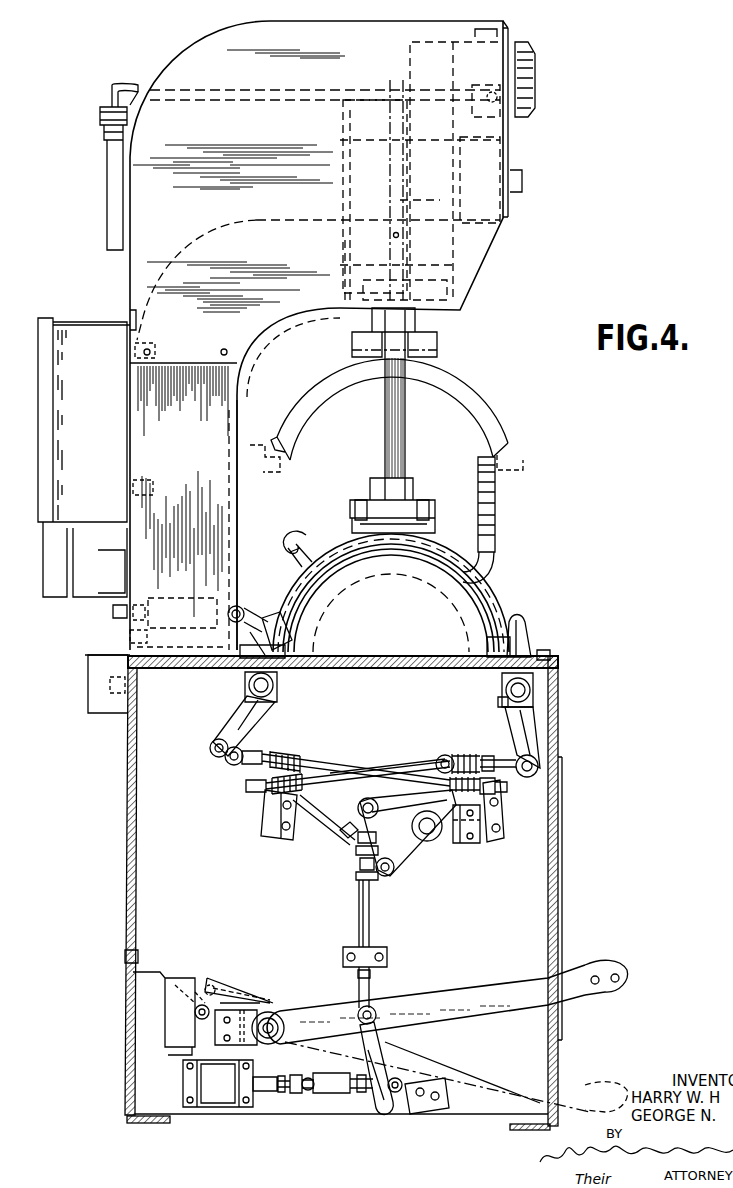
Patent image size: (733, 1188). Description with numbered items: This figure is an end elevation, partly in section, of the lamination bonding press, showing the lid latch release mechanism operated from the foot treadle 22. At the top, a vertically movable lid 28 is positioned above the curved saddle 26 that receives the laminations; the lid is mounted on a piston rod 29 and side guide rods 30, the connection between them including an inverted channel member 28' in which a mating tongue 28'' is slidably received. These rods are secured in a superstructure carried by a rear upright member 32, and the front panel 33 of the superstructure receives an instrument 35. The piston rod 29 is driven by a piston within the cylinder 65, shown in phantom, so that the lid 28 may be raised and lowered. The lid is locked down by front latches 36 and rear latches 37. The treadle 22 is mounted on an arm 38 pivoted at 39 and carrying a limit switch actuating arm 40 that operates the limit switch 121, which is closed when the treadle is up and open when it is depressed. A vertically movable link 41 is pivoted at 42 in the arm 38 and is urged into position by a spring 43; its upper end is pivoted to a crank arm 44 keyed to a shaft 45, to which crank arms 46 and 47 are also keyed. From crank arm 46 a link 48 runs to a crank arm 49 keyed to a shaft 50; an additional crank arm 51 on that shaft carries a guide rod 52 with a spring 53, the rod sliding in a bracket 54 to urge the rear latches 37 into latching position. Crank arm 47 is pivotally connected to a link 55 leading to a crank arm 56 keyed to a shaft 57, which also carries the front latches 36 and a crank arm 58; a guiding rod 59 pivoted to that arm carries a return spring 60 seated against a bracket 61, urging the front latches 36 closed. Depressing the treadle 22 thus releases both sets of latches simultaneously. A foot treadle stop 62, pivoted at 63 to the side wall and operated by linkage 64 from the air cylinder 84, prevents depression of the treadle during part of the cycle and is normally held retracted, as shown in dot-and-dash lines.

The foot treadle 22 is at (600, 966).
The curved saddle 26 is at (455, 608).
The lid 28 is at (408, 471).
The inverted channel member 28' is at (335, 491).
The mating tongue 28'' is at (449, 498).
The piston rod 29 is at (385, 398).
The side guide rods 30 is at (403, 424).
The rear upright member 32 is at (238, 512).
The front panel 33 is at (503, 21).
The instrument 35 is at (535, 55).
The front latches 36 is at (515, 626).
The rear latches 37 is at (280, 608).
The arm 38 is at (480, 992).
The pivot 39 is at (272, 1018).
The limit switch actuating arm 40 is at (223, 1002).
The vertically movable link 41 is at (370, 920).
The pivot 42 is at (372, 1008).
The spring 43 is at (358, 872).
The crank arm 44 is at (408, 790).
The shaft 45 is at (430, 832).
The crank arm 46 is at (408, 860).
The crank arm 47 is at (463, 845).
The link 48 is at (325, 835).
The crank arm 49 is at (230, 722).
The shaft 50 is at (250, 684).
The crank arm 51 is at (250, 738).
The guide rod 52 is at (348, 762).
The spring 53 is at (300, 764).
The bracket 54 is at (492, 802).
The link 55 is at (462, 754).
The crank arm 56 is at (538, 732).
The shaft 57 is at (545, 692).
The crank arm 58 is at (503, 712).
The guiding rod 59 is at (421, 768).
The return spring 60 is at (470, 768).
The bracket 61 is at (272, 808).
The foot treadle stop 62 is at (395, 1038).
The pivot 63 is at (380, 1110).
The linkage 64 is at (270, 1092).
The cylinder 65 is at (362, 156).
The cylinder 84 is at (212, 1105).
The limit switch 121 is at (178, 985).